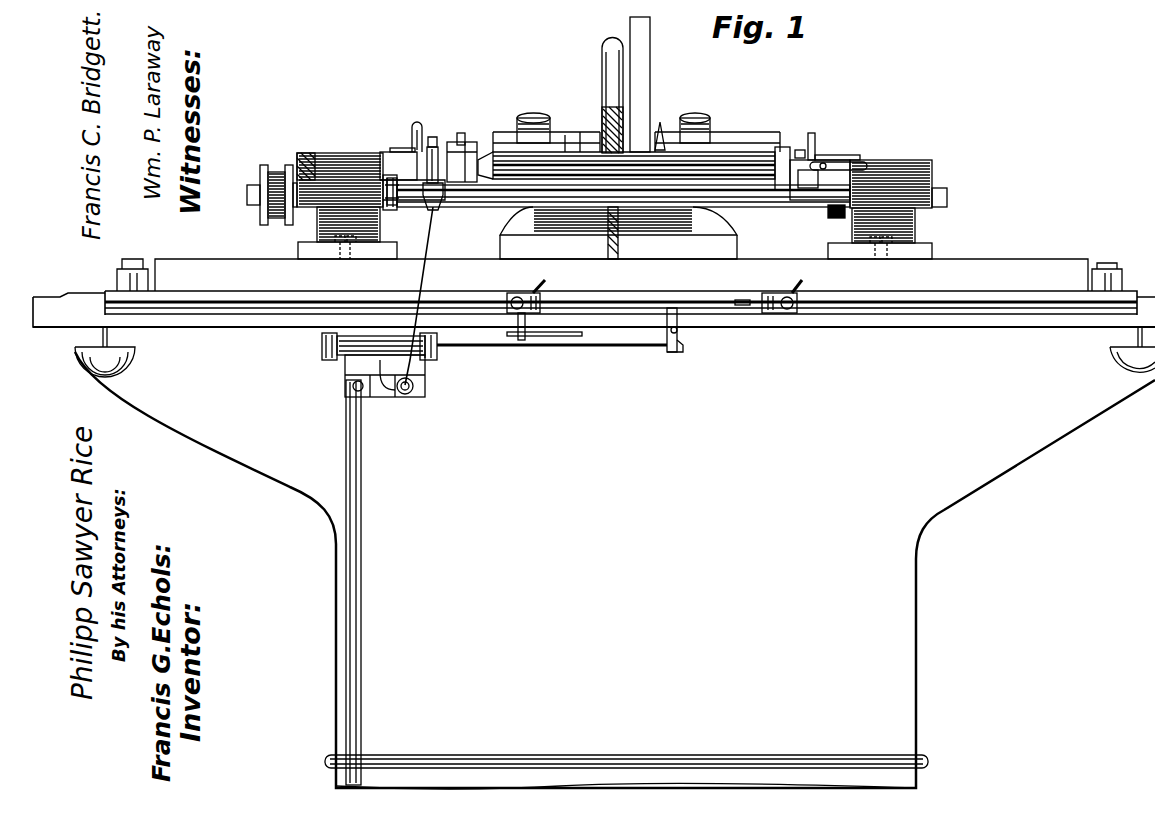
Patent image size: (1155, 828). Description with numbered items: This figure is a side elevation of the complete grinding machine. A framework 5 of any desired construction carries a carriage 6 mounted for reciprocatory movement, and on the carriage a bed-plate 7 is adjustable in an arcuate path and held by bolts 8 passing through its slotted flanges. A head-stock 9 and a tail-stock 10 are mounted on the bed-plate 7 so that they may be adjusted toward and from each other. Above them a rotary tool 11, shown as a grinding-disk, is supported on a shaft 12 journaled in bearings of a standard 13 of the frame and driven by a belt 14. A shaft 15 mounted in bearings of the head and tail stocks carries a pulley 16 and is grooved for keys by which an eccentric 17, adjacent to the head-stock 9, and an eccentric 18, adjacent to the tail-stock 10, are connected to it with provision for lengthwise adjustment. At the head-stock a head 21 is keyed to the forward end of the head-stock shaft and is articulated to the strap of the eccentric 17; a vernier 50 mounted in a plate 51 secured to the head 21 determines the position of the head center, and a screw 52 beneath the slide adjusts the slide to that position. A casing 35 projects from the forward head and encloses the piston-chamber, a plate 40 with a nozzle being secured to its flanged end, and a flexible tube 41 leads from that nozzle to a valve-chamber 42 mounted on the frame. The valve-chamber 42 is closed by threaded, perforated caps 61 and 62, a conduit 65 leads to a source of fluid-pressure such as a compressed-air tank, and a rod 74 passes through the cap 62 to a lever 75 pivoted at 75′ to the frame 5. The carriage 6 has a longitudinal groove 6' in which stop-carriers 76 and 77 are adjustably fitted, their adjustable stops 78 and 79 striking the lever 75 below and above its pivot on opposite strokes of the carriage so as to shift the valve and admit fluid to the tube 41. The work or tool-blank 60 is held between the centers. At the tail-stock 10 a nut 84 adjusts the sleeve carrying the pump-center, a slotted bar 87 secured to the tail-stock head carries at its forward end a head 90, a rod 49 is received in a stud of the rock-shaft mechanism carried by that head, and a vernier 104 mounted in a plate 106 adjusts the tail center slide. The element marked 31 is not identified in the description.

The framework 5 is at (615, 570).
The carriage 6 is at (594, 334).
The longitudinal groove 6' is at (911, 341).
The bed-plate 7 is at (621, 275).
The bolts 8 is at (138, 259).
The head-stock 9 is at (330, 226).
The tail-stock 10 is at (900, 226).
The rotary tool 11 is at (605, 125).
The shaft 12 is at (560, 135).
The standard 13 is at (548, 212).
The belt 14 is at (650, 102).
The shaft 15 is at (795, 210).
The pulley 16 is at (278, 165).
The eccentric 17 is at (393, 212).
The eccentric 18 is at (834, 218).
The head 21 is at (412, 176).
The bracket 31 is at (466, 140).
The casing 35 is at (438, 148).
The plate 40 is at (438, 197).
The flexible tube 41 is at (437, 228).
The valve-chamber 42 is at (381, 366).
The rod 49 is at (745, 207).
The vernier 50 is at (412, 130).
The plate 51 is at (392, 148).
The screw 52 is at (404, 198).
The work or tool-blank 60 is at (784, 150).
The cap 61 is at (322, 337).
The cap 62 is at (437, 357).
The conduit 65 is at (361, 436).
The rod 74 is at (512, 348).
The lever 75 is at (677, 342).
The pivot 75′ is at (678, 330).
The stop-carrier 76 is at (540, 293).
The stop-carrier 77 is at (790, 293).
The stop 78 is at (553, 336).
The stop 79 is at (745, 300).
The nut 84 is at (820, 168).
The bar 87 is at (866, 165).
The head 90 is at (800, 150).
The vernier 104 is at (815, 138).
The plate 106 is at (826, 155).